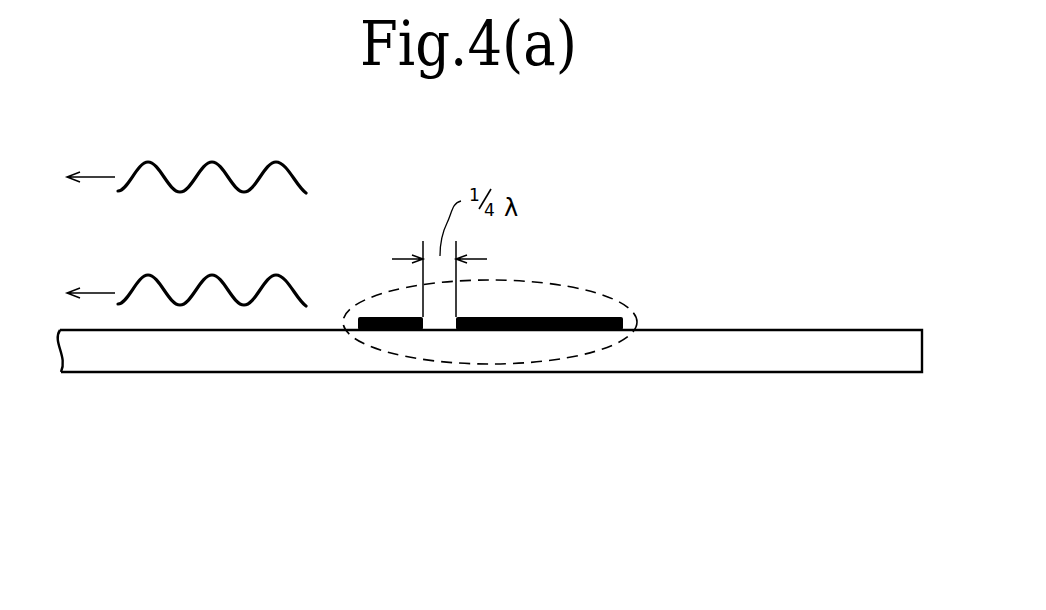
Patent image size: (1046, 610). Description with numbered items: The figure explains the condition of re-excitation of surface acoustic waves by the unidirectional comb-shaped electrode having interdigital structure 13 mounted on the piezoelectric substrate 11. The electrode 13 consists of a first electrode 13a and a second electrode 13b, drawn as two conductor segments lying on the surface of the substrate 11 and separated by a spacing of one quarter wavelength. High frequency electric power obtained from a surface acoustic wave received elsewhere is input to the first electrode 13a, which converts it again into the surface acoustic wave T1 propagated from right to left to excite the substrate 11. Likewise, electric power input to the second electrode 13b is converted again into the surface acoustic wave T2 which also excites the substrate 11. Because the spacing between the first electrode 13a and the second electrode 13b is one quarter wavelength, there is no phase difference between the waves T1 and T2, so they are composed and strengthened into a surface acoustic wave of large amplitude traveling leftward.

The piezoelectric substrate 11 is at (800, 355).
The unidirectional comb-shaped electrode having interdigital structure 13 is at (455, 364).
The first electrode 13a is at (588, 332).
The second electrode 13b is at (379, 332).
The surface acoustic wave T1 is at (284, 276).
The surface acoustic wave T2 is at (294, 171).